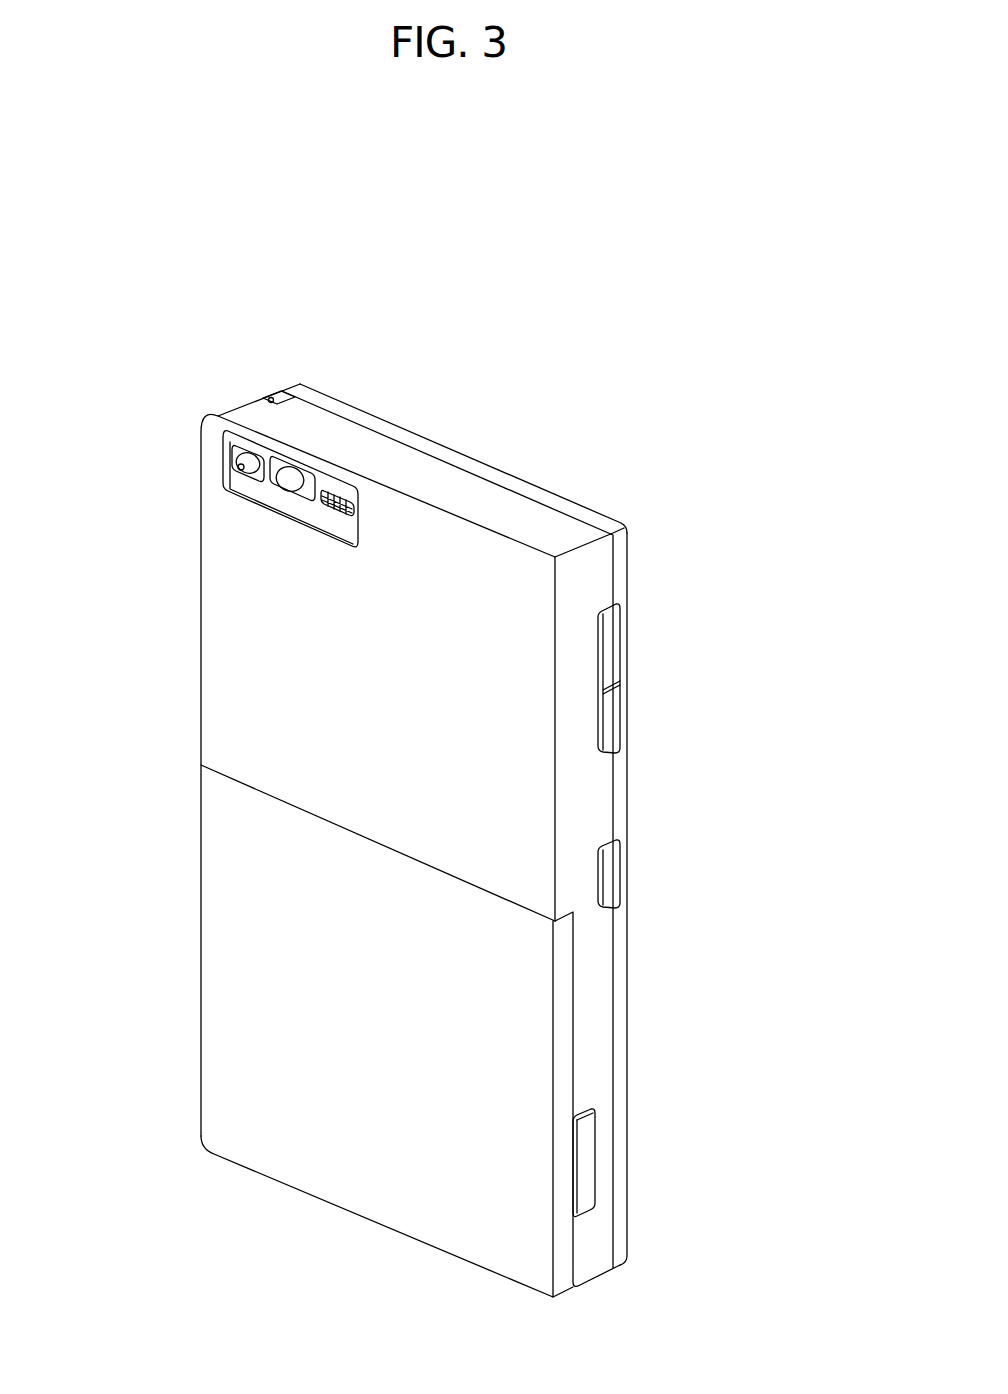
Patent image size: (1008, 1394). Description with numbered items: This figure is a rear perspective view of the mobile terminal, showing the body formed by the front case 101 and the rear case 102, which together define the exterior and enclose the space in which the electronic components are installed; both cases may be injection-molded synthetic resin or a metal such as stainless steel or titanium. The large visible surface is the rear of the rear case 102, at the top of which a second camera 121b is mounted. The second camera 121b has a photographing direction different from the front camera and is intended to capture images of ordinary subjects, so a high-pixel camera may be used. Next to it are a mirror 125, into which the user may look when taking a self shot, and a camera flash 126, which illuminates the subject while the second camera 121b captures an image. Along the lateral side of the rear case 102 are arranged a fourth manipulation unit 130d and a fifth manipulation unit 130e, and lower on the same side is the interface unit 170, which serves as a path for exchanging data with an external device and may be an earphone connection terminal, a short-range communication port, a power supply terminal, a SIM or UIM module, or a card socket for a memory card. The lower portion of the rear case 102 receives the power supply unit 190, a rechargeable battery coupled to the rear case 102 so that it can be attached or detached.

The front case 101 is at (301, 388).
The rear case 102 is at (248, 412).
The second camera 121b is at (287, 483).
The mirror 125 is at (243, 461).
The camera flash 126 is at (343, 495).
The fourth manipulation unit 130d is at (612, 643).
The fifth manipulation unit 130e is at (608, 866).
The interface unit 170 is at (583, 1178).
The power supply unit 190 is at (232, 957).